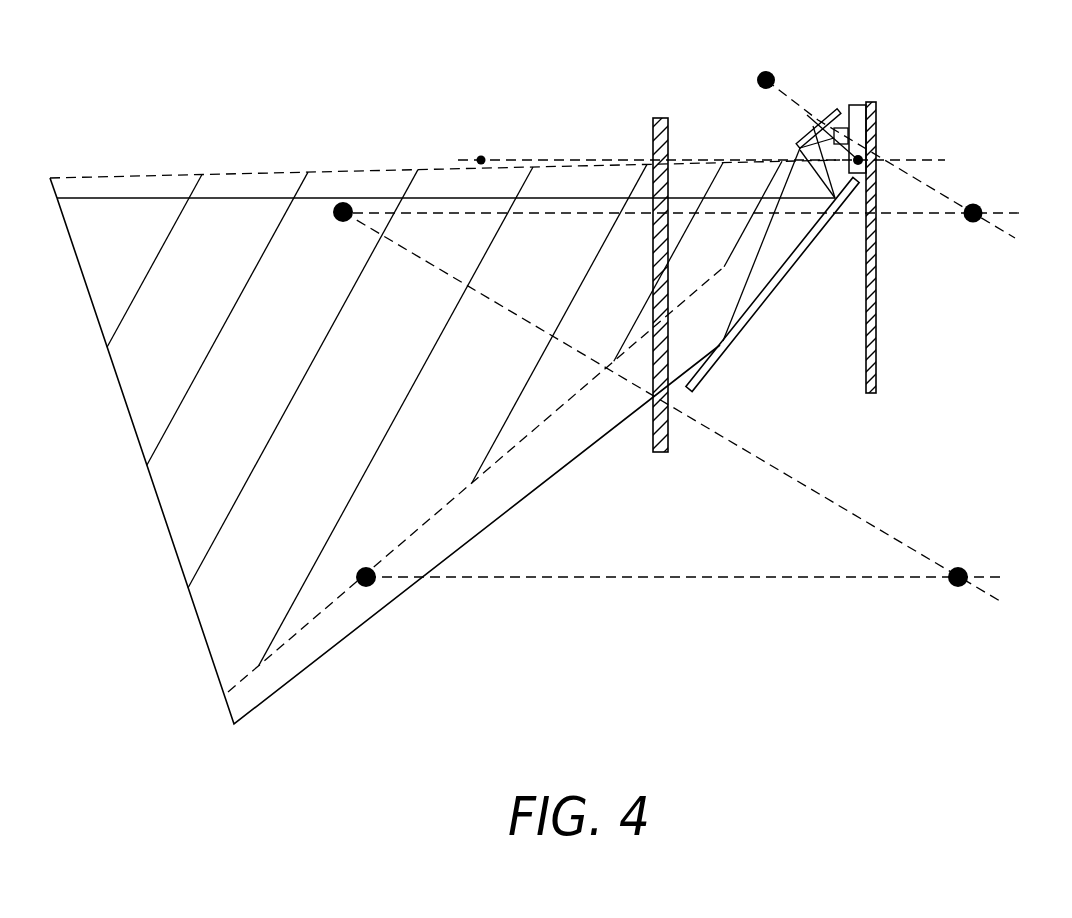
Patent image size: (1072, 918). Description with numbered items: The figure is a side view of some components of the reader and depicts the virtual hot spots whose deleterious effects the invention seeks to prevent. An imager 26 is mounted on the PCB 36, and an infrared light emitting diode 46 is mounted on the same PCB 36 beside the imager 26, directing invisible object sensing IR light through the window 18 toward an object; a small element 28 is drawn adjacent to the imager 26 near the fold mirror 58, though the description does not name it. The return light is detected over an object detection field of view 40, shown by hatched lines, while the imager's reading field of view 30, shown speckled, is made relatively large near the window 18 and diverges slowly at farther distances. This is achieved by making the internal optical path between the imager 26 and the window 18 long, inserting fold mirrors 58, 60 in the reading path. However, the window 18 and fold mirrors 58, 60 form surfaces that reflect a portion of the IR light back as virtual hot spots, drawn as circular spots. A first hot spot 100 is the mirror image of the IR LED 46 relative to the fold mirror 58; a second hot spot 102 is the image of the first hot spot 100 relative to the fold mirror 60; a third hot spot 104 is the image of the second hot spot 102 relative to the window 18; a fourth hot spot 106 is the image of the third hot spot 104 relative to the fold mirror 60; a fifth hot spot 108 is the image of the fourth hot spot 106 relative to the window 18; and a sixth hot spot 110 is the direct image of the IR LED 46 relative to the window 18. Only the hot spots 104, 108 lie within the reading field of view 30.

The window 18 is at (656, 453).
The imager 26 is at (860, 105).
The aperture block 28 is at (843, 127).
The reading field of view 30 is at (113, 200).
The PCB 36 is at (876, 248).
The object detection field of view 40 is at (222, 176).
The infrared light emitting diode 46 is at (862, 156).
The fold mirror 58 is at (822, 122).
The fold mirror 60 is at (778, 280).
The first hot spot 100 is at (757, 80).
The second hot spot 102 is at (974, 204).
The third hot spot 104 is at (343, 202).
The fourth hot spot 106 is at (958, 567).
The fifth hot spot 108 is at (367, 587).
The sixth hot spot 110 is at (482, 155).